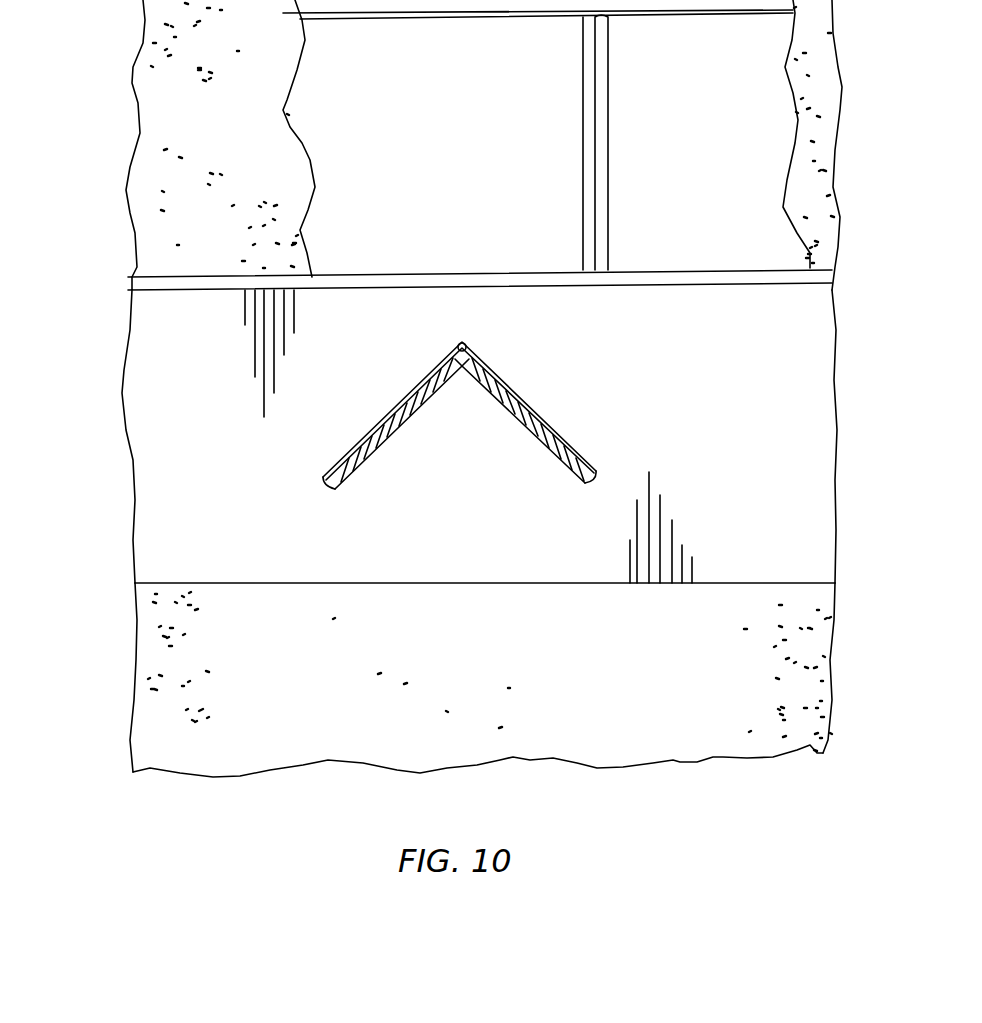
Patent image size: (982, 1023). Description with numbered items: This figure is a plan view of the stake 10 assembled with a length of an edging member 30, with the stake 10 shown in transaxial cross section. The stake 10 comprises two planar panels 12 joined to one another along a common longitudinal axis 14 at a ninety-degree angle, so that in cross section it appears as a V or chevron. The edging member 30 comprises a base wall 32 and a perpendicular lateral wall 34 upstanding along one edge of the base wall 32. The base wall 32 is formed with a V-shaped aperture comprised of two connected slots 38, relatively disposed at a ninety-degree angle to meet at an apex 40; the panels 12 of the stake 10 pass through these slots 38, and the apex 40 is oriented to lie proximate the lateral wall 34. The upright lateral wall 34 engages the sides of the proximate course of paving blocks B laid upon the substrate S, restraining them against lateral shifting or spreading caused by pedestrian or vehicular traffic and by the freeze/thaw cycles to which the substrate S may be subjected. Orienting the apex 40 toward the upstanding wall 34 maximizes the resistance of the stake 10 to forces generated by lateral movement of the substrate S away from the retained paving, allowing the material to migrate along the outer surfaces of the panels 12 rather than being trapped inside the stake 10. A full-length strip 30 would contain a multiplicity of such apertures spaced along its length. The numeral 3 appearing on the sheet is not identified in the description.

The stake 10 is at (472, 399).
The planar panels 12 is at (366, 434).
The longitudinal axis 14 is at (462, 369).
The edging member 30 is at (458, 388).
The base wall 32 is at (818, 393).
The lateral wall 34 is at (816, 275).
The slots 38 is at (410, 383).
The apex 40 is at (498, 330).
The wall section 3 is at (191, 138).
The paving blocks B is at (538, 140).
The substrate S is at (820, 135).